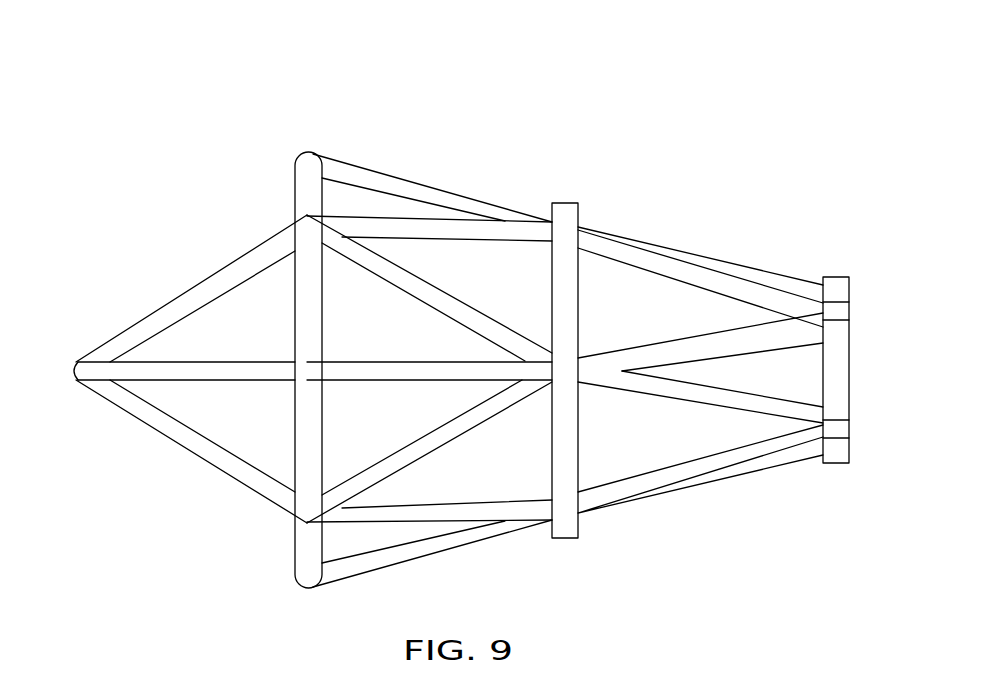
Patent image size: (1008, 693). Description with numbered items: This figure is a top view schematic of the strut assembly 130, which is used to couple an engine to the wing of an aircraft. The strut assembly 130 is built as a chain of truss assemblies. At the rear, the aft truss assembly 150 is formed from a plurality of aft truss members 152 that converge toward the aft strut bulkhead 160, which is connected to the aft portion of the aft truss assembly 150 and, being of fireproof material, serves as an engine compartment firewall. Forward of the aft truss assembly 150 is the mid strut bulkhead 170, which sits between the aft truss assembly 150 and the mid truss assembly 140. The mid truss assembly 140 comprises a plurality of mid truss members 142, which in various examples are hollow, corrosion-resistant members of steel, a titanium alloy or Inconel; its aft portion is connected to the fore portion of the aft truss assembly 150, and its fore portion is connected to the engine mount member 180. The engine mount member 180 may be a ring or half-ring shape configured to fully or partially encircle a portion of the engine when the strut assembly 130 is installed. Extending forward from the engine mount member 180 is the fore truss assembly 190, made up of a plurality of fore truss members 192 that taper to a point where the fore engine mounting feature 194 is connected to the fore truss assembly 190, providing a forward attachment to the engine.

The strut assembly 130 is at (727, 118).
The mid truss assembly 140 is at (462, 168).
The mid truss members 142 is at (488, 205).
The aft truss assembly 150 is at (755, 215).
The aft truss members 152 is at (690, 272).
The aft strut bulkhead 160 is at (852, 295).
The mid strut bulkhead 170 is at (578, 213).
The engine mount member 180 is at (313, 150).
The fore truss assembly 190 is at (181, 282).
The fore truss members 192 is at (132, 330).
The fore engine mounting feature 194 is at (72, 368).